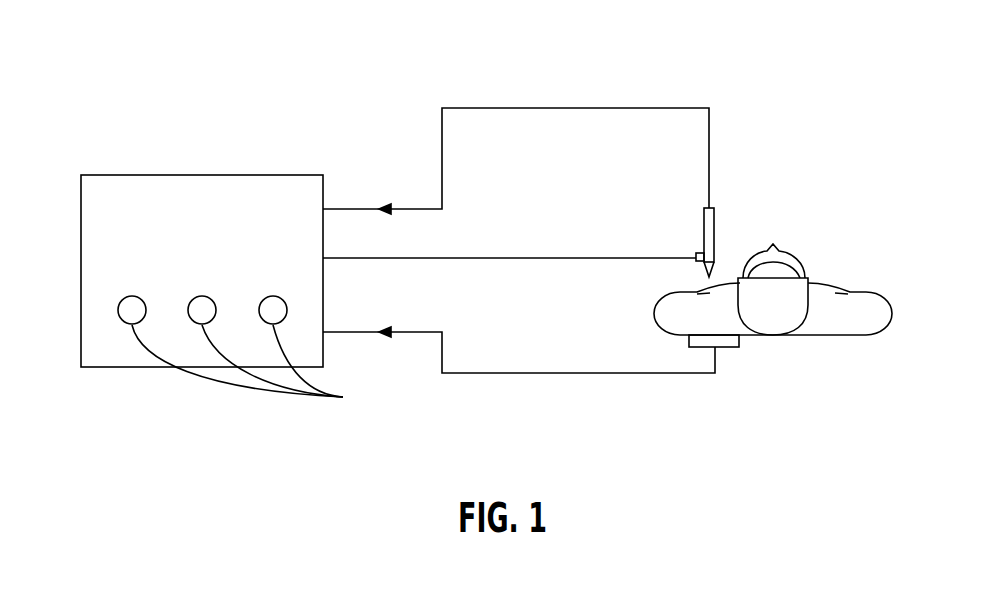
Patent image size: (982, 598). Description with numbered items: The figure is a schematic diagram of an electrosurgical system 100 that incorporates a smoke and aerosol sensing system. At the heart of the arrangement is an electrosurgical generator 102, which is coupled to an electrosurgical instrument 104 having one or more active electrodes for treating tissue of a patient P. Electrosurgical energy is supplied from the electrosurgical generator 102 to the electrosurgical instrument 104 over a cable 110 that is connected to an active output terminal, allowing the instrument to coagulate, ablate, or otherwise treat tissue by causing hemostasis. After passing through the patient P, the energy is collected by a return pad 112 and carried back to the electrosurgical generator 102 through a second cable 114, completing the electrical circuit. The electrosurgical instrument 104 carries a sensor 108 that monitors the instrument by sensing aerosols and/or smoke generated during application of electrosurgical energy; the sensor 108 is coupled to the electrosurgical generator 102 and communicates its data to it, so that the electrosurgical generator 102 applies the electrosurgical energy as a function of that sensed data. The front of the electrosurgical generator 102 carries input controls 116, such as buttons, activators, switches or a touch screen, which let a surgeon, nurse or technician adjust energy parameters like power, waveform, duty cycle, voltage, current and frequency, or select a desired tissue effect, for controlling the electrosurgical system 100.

The electrosurgical system 100 is at (782, 62).
The electrosurgical generator 102 is at (117, 174).
The electrosurgical instrument 104 is at (716, 220).
The sensor 108 is at (702, 253).
The cable 110 is at (570, 107).
The return pad 112 is at (730, 347).
The cable 114 is at (568, 374).
The input controls 116 is at (343, 397).
The patient P is at (853, 279).